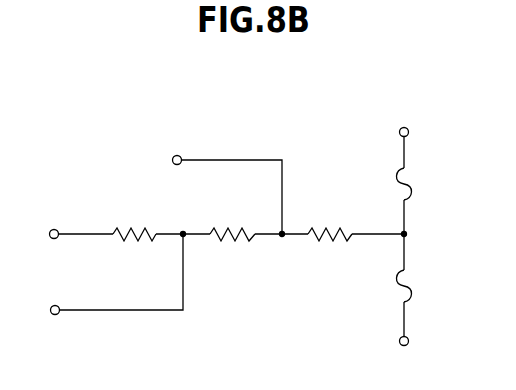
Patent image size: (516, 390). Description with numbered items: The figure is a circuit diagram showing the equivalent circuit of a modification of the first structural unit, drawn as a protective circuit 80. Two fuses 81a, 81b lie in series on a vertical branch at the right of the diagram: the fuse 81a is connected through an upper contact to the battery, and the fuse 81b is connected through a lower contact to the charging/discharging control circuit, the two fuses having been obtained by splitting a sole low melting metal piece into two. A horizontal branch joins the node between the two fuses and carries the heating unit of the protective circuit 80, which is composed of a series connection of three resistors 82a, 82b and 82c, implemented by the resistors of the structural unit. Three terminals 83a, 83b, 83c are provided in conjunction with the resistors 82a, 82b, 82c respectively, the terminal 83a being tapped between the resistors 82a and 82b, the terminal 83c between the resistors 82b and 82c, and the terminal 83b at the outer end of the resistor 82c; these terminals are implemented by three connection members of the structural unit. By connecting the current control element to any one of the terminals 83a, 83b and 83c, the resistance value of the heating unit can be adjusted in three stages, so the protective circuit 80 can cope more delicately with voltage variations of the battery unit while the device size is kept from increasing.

The protective circuit 80 is at (296, 90).
The fuse 81a is at (409, 180).
The fuse 81b is at (409, 278).
The resistor 82a is at (335, 230).
The resistor 82b is at (237, 230).
The resistor 82c is at (133, 231).
The terminal 83a is at (178, 155).
The terminal 83b is at (52, 229).
The terminal 83c is at (53, 316).